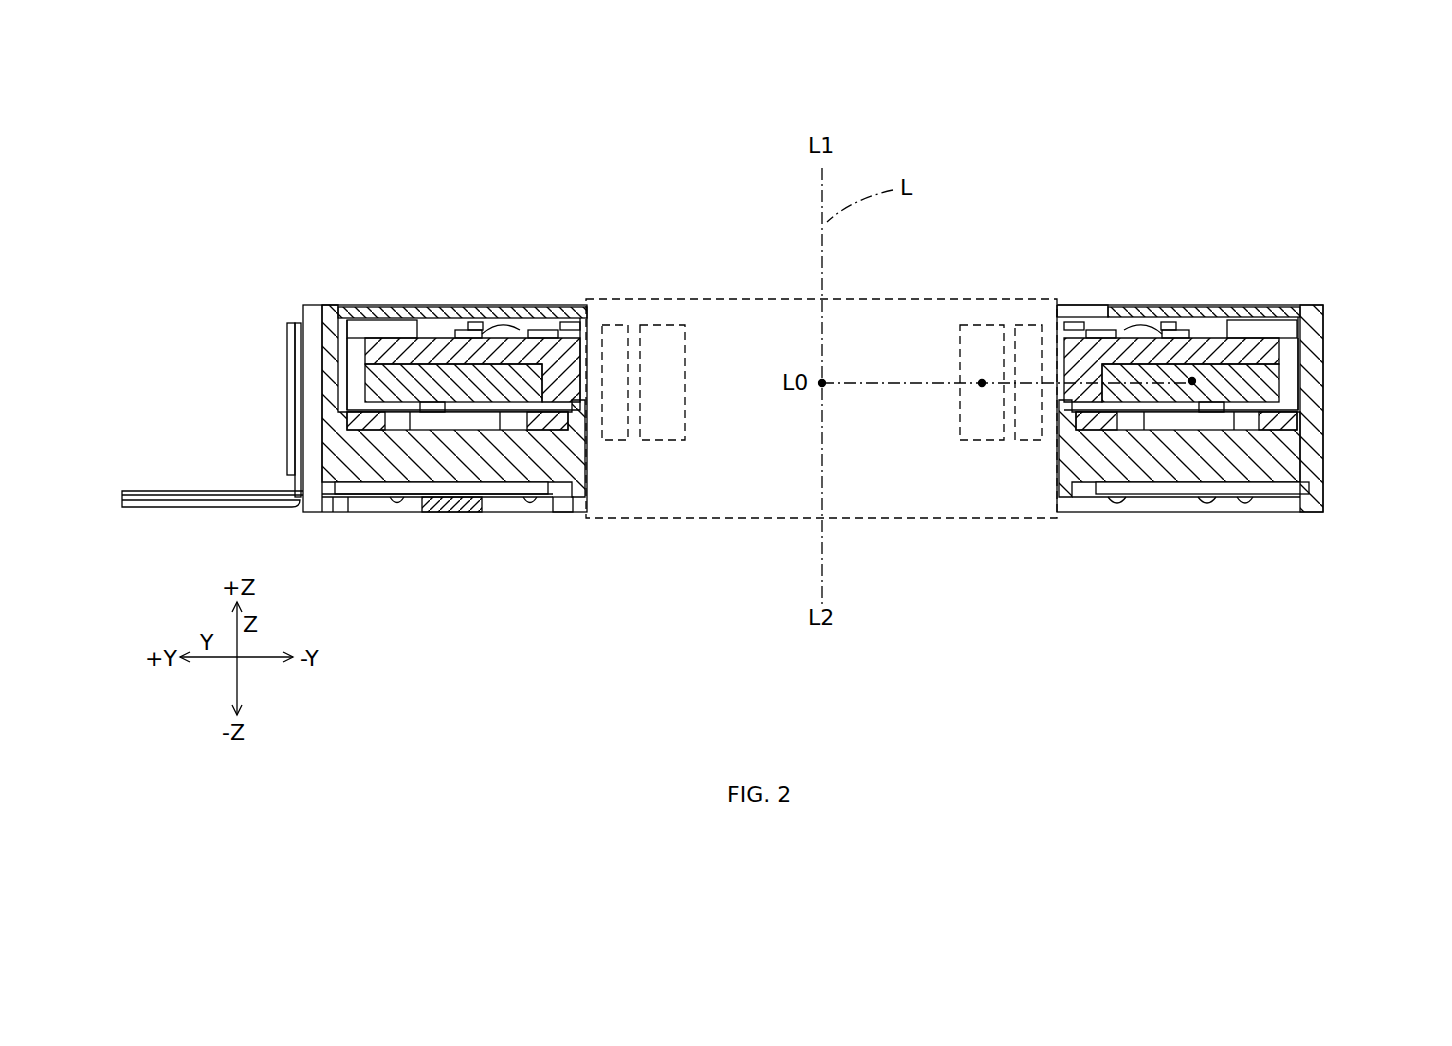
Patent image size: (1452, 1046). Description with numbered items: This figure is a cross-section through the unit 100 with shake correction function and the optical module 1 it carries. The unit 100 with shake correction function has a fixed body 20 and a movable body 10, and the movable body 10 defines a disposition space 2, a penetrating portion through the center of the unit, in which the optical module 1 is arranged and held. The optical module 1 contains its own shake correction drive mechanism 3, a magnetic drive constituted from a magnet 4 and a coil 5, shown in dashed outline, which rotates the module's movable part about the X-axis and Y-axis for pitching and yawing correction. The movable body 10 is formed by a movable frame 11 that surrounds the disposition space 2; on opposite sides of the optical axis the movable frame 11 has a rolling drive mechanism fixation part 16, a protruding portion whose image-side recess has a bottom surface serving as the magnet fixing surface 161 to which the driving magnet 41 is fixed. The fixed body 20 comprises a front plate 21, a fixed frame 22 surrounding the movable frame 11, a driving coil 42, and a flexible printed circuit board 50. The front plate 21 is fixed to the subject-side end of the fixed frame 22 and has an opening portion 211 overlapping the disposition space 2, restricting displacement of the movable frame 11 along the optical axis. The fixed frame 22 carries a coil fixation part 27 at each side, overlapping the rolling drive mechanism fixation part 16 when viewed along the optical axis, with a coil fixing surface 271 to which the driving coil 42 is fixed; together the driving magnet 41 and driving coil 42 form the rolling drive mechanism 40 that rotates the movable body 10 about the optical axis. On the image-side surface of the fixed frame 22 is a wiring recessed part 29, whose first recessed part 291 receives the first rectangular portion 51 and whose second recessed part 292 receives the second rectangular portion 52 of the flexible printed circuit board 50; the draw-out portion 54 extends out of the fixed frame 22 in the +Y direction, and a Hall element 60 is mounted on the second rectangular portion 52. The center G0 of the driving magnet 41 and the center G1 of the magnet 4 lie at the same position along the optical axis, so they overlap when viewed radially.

The unit with shake correction function 100 is at (282, 168).
The optical module 1 is at (920, 299).
The disposition space 2 is at (587, 465).
The shake correction drive mechanism 3 is at (827, 313).
The magnet 4 is at (660, 325).
The coil 5 is at (615, 325).
The movable body 10 is at (462, 271).
The movable frame 11 is at (545, 340).
The rolling drive mechanism fixation part 16 is at (390, 335).
The magnet fixing surface 161 is at (367, 380).
The fixed body 20 is at (1248, 365).
The front plate 21 is at (1282, 307).
The opening portion 211 is at (1098, 306).
The fixed frame 22 is at (1313, 450).
The coil fixation part 27 is at (587, 449).
The coil fixing surface 271 is at (547, 423).
The wiring recessed part 29 is at (814, 542).
The first recessed part 291 is at (1230, 487).
The second recessed part 292 is at (372, 485).
The rolling drive mechanism 40 is at (823, 360).
The driving magnet 41 is at (365, 372).
The driving coil 42 is at (343, 418).
The flexible printed circuit board 50 is at (747, 517).
The first rectangular portion 51 is at (1277, 498).
The second rectangular portion 52 is at (505, 500).
The draw-out portion 54 is at (215, 491).
The Hall element 60 is at (433, 505).
The center of the driving magnet G0 is at (1192, 381).
The center of the magnet G1 is at (982, 383).